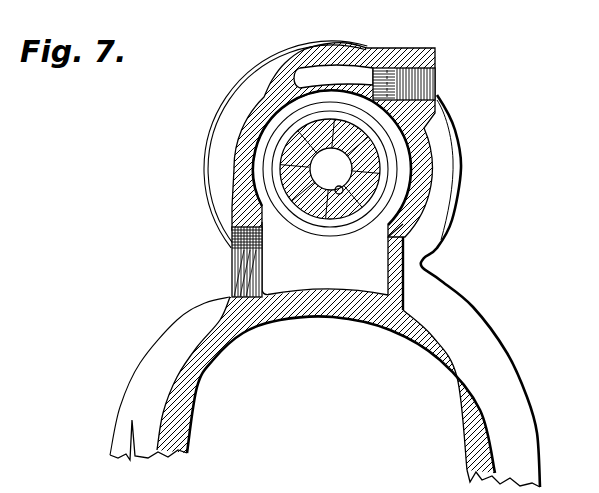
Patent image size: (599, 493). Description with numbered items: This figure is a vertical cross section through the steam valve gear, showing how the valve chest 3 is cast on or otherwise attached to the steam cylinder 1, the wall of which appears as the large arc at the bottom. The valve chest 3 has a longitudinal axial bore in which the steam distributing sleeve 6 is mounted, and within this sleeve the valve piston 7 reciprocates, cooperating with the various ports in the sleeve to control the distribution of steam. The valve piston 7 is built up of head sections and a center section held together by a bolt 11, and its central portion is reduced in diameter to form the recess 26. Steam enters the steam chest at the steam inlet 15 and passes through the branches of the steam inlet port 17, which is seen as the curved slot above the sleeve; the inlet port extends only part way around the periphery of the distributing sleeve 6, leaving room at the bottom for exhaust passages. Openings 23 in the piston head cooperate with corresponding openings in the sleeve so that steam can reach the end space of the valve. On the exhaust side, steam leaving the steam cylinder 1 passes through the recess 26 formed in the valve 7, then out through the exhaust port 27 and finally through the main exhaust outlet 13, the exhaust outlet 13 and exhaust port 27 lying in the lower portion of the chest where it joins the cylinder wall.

The steam cylinder 1 is at (467, 390).
The valve chest 3 is at (232, 140).
The steam distributing sleeve 6 is at (292, 126).
The valve piston 7 is at (370, 155).
The bolt 11 is at (342, 194).
The main exhaust outlet 13 is at (243, 288).
The steam inlet 15 is at (436, 86).
The steam inlet port 17 is at (337, 74).
The openings in piston head 23 is at (390, 153).
The recess 26 is at (378, 198).
The exhaust port 27 is at (335, 273).